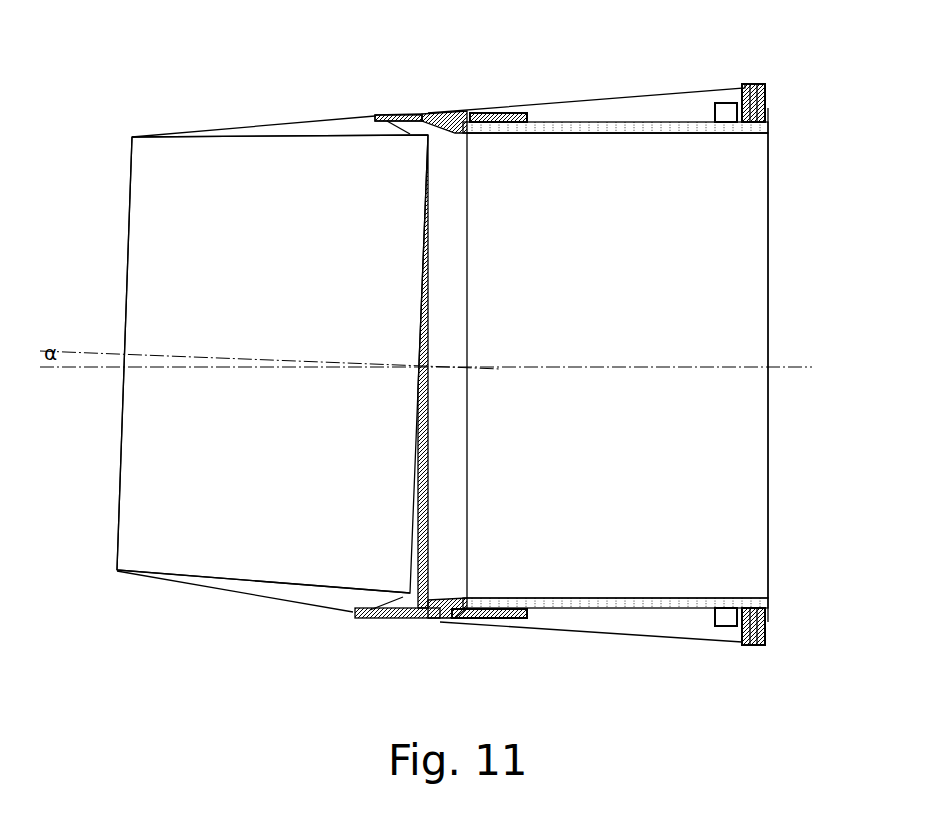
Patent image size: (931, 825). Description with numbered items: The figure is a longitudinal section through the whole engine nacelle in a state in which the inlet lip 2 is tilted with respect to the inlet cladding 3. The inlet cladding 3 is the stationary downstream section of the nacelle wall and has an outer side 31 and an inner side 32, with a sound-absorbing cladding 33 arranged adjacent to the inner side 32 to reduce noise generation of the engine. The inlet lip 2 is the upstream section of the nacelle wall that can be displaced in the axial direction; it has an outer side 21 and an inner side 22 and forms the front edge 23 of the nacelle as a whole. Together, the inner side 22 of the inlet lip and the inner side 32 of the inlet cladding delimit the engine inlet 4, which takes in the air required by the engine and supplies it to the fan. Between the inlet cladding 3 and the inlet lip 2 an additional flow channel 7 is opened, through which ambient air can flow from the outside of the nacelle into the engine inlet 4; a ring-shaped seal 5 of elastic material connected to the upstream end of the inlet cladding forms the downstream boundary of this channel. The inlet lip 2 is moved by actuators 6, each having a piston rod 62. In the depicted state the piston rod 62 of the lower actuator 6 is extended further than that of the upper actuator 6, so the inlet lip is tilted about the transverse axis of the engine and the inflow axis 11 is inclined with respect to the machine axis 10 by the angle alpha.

The inlet lip 2 is at (222, 135).
The outer side of the inlet lip 21 is at (273, 133).
The inner side of the inlet lip 22 is at (333, 135).
The front edge 23 is at (132, 140).
The inlet cladding 3 is at (565, 110).
The outer side of the inlet cladding 31 is at (653, 92).
The inner side of the inlet cladding 32 is at (595, 131).
The sound-absorbing cladding 33 is at (685, 128).
The engine inlet 4 is at (298, 463).
The ring-shaped seal 5 is at (458, 247).
The actuator 6 is at (505, 108).
The piston rod 62 is at (393, 114).
The additional flow channel 7 is at (418, 120).
The machine axis 10 is at (782, 362).
The inflow axis 11 is at (110, 352).